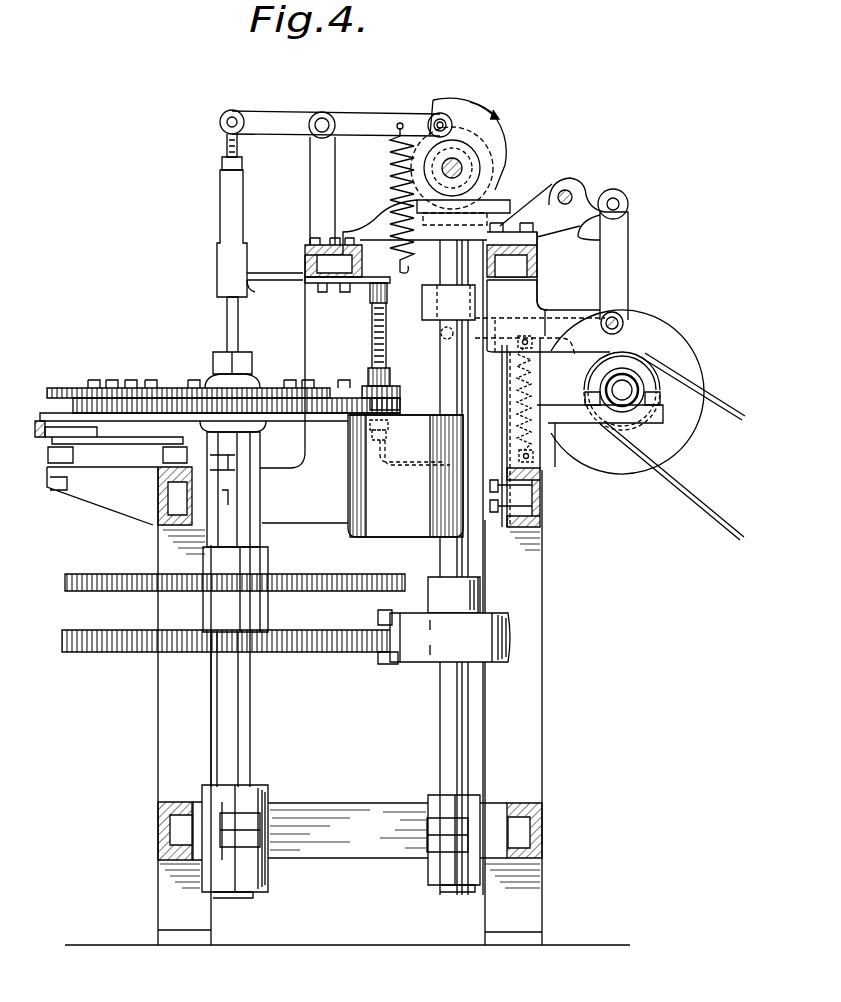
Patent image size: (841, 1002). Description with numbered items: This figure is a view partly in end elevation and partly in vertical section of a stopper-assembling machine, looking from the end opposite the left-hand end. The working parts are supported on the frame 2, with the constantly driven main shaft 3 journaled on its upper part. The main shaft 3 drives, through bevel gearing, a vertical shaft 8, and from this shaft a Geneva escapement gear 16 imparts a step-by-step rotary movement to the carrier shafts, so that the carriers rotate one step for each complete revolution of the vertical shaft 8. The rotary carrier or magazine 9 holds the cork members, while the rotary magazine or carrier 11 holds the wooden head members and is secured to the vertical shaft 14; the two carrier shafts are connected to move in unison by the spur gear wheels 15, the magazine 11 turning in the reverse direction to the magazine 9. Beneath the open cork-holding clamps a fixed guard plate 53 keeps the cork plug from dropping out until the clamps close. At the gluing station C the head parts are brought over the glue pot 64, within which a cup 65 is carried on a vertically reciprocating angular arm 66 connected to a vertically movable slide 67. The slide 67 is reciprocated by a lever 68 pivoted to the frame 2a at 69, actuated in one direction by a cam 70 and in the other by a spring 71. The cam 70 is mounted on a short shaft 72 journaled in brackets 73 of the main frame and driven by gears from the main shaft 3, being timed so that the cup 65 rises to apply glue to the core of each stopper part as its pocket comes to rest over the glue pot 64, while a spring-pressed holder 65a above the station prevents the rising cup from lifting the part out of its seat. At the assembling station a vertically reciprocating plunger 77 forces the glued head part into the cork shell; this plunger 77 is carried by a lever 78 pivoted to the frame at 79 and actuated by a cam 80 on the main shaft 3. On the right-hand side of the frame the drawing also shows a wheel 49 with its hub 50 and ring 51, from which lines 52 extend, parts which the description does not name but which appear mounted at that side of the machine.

The frame 2 is at (306, 320).
The frame 2a is at (553, 314).
The main shaft 3 is at (462, 168).
The vertical shaft 8 is at (446, 700).
The rotary carrier or magazine 9 is at (143, 388).
The rotary magazine or carrier 11 is at (70, 389).
The vertical shaft 14 is at (242, 699).
The spur gear wheels 15 is at (66, 581).
The Geneva escapement gear 16 is at (378, 658).
The drum 49 is at (617, 466).
The hub 50 is at (606, 388).
The ring 51 is at (634, 368).
The wires 52 is at (730, 417).
The fixed guard plate 53 is at (45, 433).
The glue pot 64 is at (405, 476).
The cup 65 is at (389, 432).
The spring-pressed holder 65a is at (366, 378).
The vertically reciprocating angular arm 66 is at (408, 466).
The vertically movable slide 67 is at (448, 312).
The lever 68 is at (500, 318).
The pivot 69 is at (622, 314).
The cam 70 is at (582, 238).
The spring 71 is at (520, 348).
The short shaft 72 is at (569, 193).
The brackets 73 is at (538, 192).
The vertically reciprocating plunger 77 is at (223, 356).
The lever 78 is at (292, 128).
The pivot 79 is at (322, 112).
The cam 80 is at (497, 147).
The gluing station C is at (383, 391).